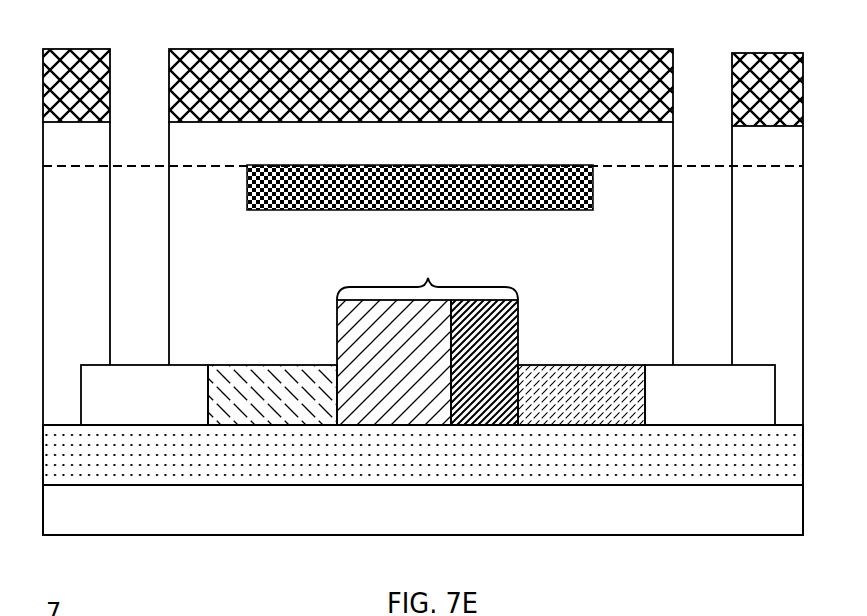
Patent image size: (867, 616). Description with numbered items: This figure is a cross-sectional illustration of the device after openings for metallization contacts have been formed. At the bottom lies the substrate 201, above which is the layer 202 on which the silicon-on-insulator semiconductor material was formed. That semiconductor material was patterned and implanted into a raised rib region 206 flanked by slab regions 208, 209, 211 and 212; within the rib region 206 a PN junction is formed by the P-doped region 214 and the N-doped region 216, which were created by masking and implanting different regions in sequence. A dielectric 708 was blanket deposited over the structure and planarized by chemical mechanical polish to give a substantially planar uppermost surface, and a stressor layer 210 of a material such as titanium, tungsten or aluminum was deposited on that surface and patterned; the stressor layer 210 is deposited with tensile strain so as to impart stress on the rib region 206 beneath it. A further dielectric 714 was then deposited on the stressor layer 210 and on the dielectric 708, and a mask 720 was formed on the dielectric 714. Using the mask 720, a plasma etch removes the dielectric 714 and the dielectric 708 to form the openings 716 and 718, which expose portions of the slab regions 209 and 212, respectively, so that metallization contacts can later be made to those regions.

The mask 720 is at (440, 96).
The opening 716 is at (156, 232).
The opening 718 is at (686, 217).
The dielectric 714 is at (443, 152).
The dielectric 708 is at (255, 288).
The stressor layer 210 is at (443, 197).
The rib region 206 is at (427, 272).
The P-doped region 214 is at (415, 407).
The N-doped region 216 is at (503, 407).
The slab region 209 is at (158, 407).
The slab region 208 is at (290, 407).
The slab region 211 is at (593, 407).
The slab region 212 is at (721, 407).
The layer 202 is at (420, 467).
The substrate 201 is at (422, 519).